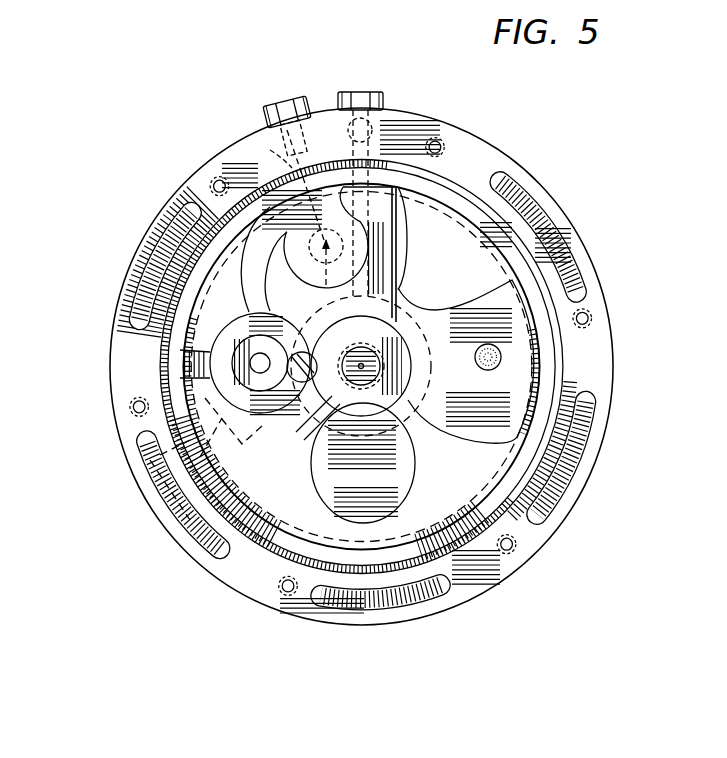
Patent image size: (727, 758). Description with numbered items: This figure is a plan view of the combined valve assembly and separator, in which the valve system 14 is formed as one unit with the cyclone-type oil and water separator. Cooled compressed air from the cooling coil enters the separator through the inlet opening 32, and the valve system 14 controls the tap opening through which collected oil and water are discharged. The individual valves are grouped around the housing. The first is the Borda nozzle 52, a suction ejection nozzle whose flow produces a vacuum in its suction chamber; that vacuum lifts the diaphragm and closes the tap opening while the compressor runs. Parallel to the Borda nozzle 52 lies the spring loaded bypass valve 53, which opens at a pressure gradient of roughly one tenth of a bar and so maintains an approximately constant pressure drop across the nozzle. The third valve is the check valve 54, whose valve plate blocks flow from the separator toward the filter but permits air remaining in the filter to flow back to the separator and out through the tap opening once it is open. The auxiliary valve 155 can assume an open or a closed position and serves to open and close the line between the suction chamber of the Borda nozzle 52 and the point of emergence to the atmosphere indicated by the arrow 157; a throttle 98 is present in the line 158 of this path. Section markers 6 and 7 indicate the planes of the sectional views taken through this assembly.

The valve system 14 is at (513, 163).
The inlet opening 32 is at (200, 457).
The Borda nozzle 52 is at (339, 389).
The bypass valve 53 is at (259, 359).
The check valve 54 is at (487, 353).
The throttle 98 is at (316, 122).
The auxiliary valve 155 is at (345, 288).
The point of emergence to the atmosphere 157 is at (268, 111).
The line 158 is at (280, 158).
The section line 7- 7 is at (292, 135).
The section line 6- 6 is at (75, 421).